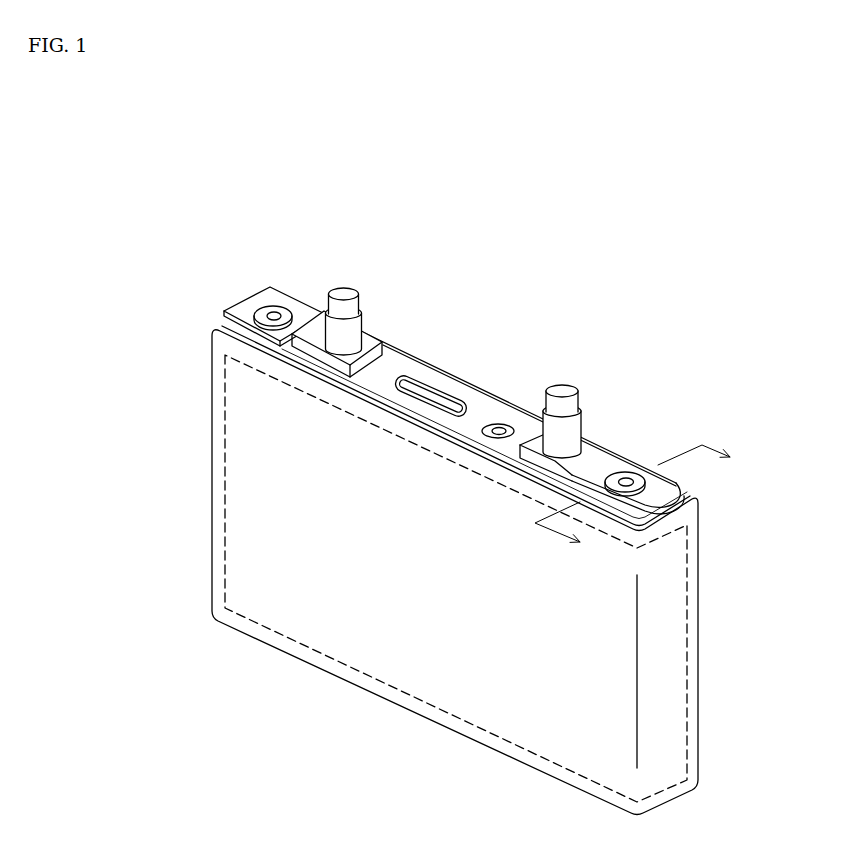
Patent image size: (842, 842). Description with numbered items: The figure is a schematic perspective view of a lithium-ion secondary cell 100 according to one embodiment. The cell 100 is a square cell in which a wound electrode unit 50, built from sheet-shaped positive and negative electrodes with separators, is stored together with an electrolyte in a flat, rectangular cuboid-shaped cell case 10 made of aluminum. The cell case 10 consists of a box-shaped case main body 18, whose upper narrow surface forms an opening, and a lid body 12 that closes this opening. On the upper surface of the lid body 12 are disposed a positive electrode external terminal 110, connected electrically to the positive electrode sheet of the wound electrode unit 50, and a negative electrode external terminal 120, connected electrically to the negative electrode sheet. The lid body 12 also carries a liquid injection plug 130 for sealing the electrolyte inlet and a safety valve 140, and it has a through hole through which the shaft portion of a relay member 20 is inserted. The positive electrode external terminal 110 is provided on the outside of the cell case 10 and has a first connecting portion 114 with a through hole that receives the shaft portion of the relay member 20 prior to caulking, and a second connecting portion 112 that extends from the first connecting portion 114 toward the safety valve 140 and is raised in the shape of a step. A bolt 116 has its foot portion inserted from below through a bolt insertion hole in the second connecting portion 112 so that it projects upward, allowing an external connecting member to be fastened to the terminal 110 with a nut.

The lithium-ion secondary cell 100 is at (721, 251).
The cell case 10 is at (702, 746).
The lid body 12 is at (420, 358).
The case main body 18 is at (692, 684).
The relay member 20 is at (638, 462).
The wound electrode unit 50 is at (372, 668).
The positive electrode external terminal 110 is at (668, 468).
The second connecting portion 112 is at (588, 446).
The first connecting portion 114 is at (682, 484).
The bolt 116 is at (564, 390).
The negative electrode external terminal 120 is at (276, 300).
The liquid injection plug 130 is at (498, 424).
The safety valve 140 is at (462, 374).